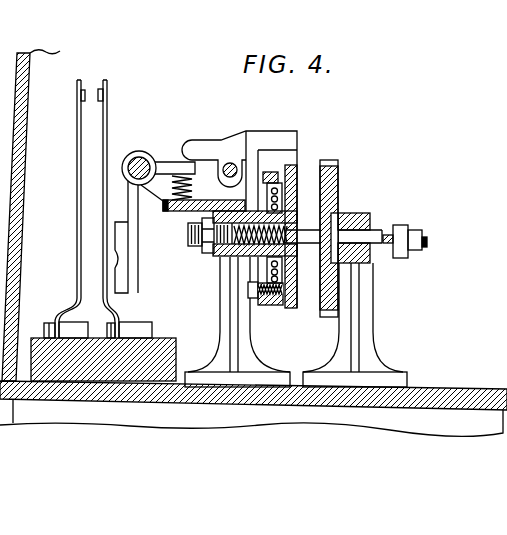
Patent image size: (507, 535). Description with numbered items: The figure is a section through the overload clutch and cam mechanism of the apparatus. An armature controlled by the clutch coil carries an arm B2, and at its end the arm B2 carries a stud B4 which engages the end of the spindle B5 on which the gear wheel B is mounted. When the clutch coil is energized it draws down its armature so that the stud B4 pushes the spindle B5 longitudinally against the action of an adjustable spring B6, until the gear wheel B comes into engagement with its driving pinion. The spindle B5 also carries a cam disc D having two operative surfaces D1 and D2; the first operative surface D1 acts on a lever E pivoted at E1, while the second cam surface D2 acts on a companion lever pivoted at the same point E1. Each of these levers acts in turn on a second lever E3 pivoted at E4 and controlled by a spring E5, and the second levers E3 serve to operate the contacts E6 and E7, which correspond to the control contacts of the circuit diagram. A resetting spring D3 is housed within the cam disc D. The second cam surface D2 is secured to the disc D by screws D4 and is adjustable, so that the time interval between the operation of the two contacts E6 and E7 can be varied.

The lever E is at (282, 137).
The pivot E1 is at (232, 162).
The second lever E3 is at (163, 163).
The pivot E4 is at (139, 151).
The spring E5 is at (196, 168).
The contact E6 is at (109, 105).
The contact E7 is at (77, 118).
The cam disc D is at (296, 177).
The operative surface D1 is at (288, 306).
The second cam surface D2 is at (266, 306).
The resetting spring D3 is at (297, 194).
The screws D4 is at (250, 288).
The gear wheel B is at (335, 163).
The arm B2 is at (403, 250).
The stud B4 is at (386, 236).
The spindle B5 is at (372, 250).
The adjustable spring B6 is at (218, 248).